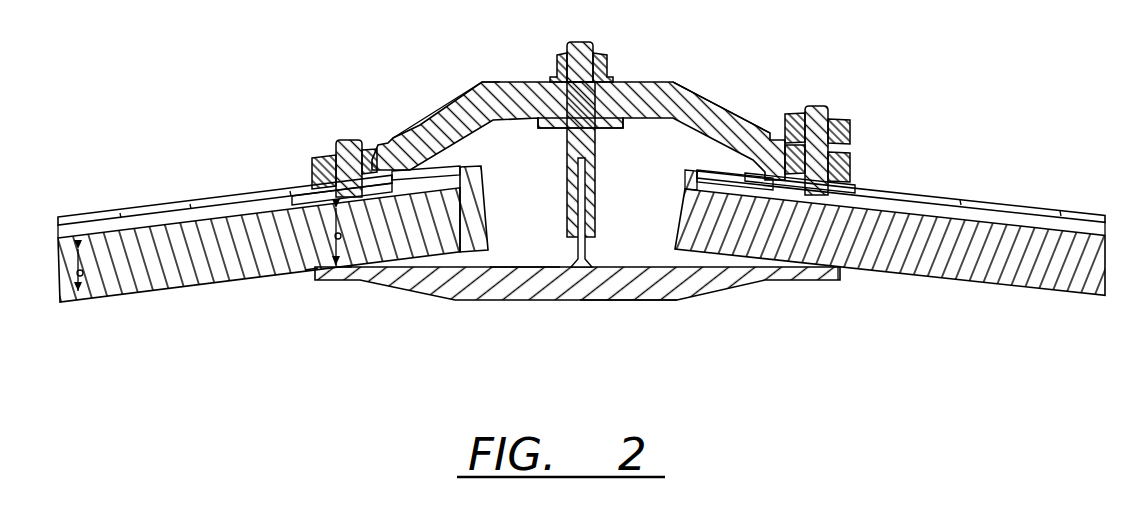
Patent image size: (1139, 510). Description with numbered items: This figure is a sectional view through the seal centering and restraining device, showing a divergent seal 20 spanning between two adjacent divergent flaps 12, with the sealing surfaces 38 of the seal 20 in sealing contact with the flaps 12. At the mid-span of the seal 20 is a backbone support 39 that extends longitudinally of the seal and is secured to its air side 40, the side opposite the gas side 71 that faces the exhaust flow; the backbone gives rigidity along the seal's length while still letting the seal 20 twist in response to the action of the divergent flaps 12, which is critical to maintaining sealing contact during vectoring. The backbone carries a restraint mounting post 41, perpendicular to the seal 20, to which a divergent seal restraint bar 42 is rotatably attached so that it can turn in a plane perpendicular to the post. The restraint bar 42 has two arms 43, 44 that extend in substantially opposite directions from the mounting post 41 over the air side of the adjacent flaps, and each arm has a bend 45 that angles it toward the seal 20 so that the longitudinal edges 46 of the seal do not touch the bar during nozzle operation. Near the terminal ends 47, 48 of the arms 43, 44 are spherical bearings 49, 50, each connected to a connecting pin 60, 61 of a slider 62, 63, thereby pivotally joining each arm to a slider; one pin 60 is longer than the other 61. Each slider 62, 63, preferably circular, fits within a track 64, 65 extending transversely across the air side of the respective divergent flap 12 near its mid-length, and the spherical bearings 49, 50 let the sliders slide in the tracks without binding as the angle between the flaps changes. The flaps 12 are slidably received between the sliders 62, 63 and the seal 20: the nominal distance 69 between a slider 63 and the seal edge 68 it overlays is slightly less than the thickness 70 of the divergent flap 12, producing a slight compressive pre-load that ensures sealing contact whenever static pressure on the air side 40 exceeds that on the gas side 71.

The divergent flap 12 is at (177, 282).
The divergent seal 20 is at (447, 280).
The sealing surface 38 is at (320, 248).
The backbone support 39 is at (590, 247).
The air side 40 is at (515, 262).
The restraint mounting post 41 is at (583, 107).
The divergent seal restraint bar 42 is at (496, 106).
The arm 43 is at (735, 120).
The arm 44 is at (417, 127).
The bend 45 is at (482, 84).
The longitudinal edge 46 is at (478, 172).
The terminal end 47 is at (856, 158).
The terminal end 48 is at (313, 165).
The spherical bearing 49 is at (858, 132).
The spherical bearing 50 is at (318, 155).
The connecting pin 60 is at (840, 118).
The connecting pin 61 is at (343, 147).
The slider 62 is at (852, 176).
The slider 63 is at (313, 185).
The track 64 is at (977, 212).
The track 65 is at (127, 221).
The seal edge 68 is at (318, 250).
The nominal distance 69 is at (346, 250).
The thickness 70 is at (58, 282).
The gas side 71 is at (634, 303).